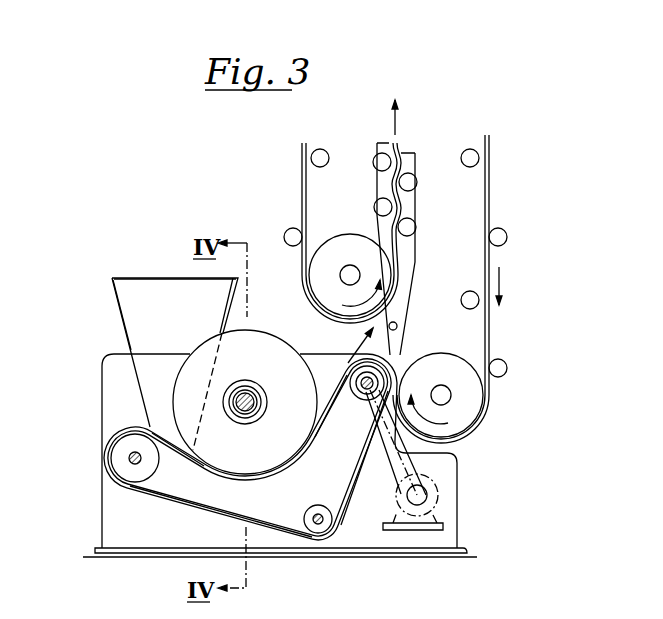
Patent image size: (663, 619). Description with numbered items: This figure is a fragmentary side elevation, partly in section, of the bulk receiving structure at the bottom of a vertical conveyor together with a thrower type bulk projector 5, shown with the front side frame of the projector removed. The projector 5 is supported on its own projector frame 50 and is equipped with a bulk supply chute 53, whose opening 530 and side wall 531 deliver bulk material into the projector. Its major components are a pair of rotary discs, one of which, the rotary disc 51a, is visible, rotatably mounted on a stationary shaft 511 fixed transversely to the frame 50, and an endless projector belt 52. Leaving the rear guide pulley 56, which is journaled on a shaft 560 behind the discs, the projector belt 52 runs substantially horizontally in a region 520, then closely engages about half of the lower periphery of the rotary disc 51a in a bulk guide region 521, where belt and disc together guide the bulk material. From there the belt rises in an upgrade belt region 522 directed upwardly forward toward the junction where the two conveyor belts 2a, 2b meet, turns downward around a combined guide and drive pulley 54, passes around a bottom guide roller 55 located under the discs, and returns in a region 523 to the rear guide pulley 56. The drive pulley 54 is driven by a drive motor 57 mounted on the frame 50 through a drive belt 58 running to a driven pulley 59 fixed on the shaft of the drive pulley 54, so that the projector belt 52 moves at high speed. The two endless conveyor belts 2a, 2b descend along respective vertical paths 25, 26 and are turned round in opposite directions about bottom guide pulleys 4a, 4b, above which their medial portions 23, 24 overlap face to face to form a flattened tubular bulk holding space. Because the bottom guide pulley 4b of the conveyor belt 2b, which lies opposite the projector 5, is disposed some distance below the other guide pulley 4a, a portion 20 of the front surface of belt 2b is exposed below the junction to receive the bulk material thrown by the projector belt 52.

The thrower type bulk projector 5 is at (80, 276).
The projector frame 50 is at (103, 384).
The bulk supply chute 53 is at (142, 272).
The hopper opening 530 is at (165, 275).
The hopper wall 531 is at (130, 326).
The rotary disc 51a is at (263, 341).
The stationary shaft 511 is at (249, 413).
The endless projector belt 52 is at (183, 510).
The substantially horizontal belt region 520 is at (175, 441).
The bulk guide region 521 is at (288, 472).
The upgrade belt region 522 is at (336, 400).
The return belt region 523 is at (198, 508).
The rear guide pulley 56 is at (121, 441).
The shaft 560 is at (130, 459).
The bottom guide roller 55 is at (325, 528).
The driven pulley 59 is at (362, 407).
The drive belt 58 is at (385, 447).
The drive motor 57 is at (440, 497).
The combined guide and drive pulley 54 is at (353, 366).
The bottom guide pulley 4a is at (322, 233).
The bottom guide pulley 4b is at (485, 355).
The vertical belt path 25 is at (307, 178).
The vertical belt path 26 is at (488, 205).
The endless conveyor belt 2a is at (367, 178).
The endless conveyor belt 2b is at (425, 175).
The medial portion 23 is at (373, 192).
The medial portion 24 is at (417, 208).
The exposed front surface portion 20 is at (397, 329).